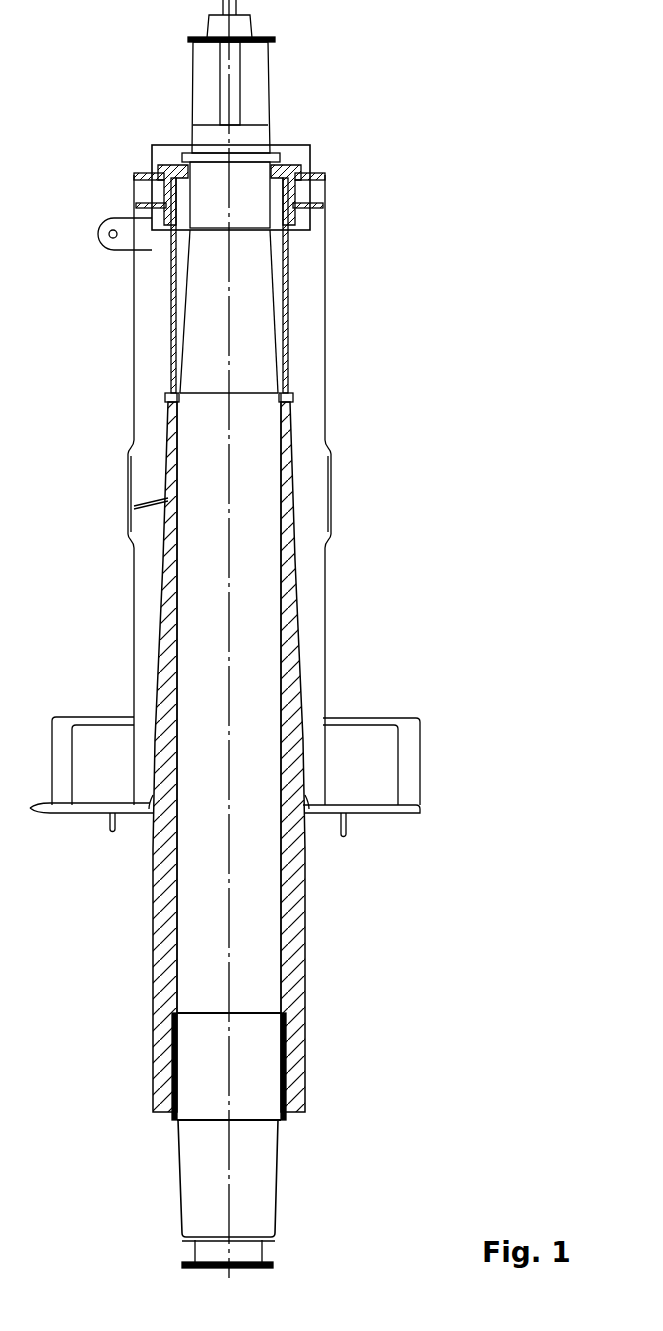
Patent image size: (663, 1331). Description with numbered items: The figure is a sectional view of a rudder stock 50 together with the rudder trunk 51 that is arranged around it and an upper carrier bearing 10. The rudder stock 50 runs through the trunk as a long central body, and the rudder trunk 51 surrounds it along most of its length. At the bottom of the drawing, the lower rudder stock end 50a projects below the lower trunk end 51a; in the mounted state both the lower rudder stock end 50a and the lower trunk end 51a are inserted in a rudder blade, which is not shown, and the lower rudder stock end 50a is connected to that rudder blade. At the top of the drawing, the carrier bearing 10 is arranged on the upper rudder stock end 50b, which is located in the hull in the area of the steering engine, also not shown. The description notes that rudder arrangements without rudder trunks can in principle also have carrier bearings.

The carrier bearing 10 is at (172, 153).
The rudder stock 50 is at (243, 513).
The lower rudder stock end 50a is at (255, 1197).
The upper rudder stock end 50b is at (253, 110).
The rudder trunk 51 is at (292, 715).
The lower trunk end 51a is at (287, 1047).